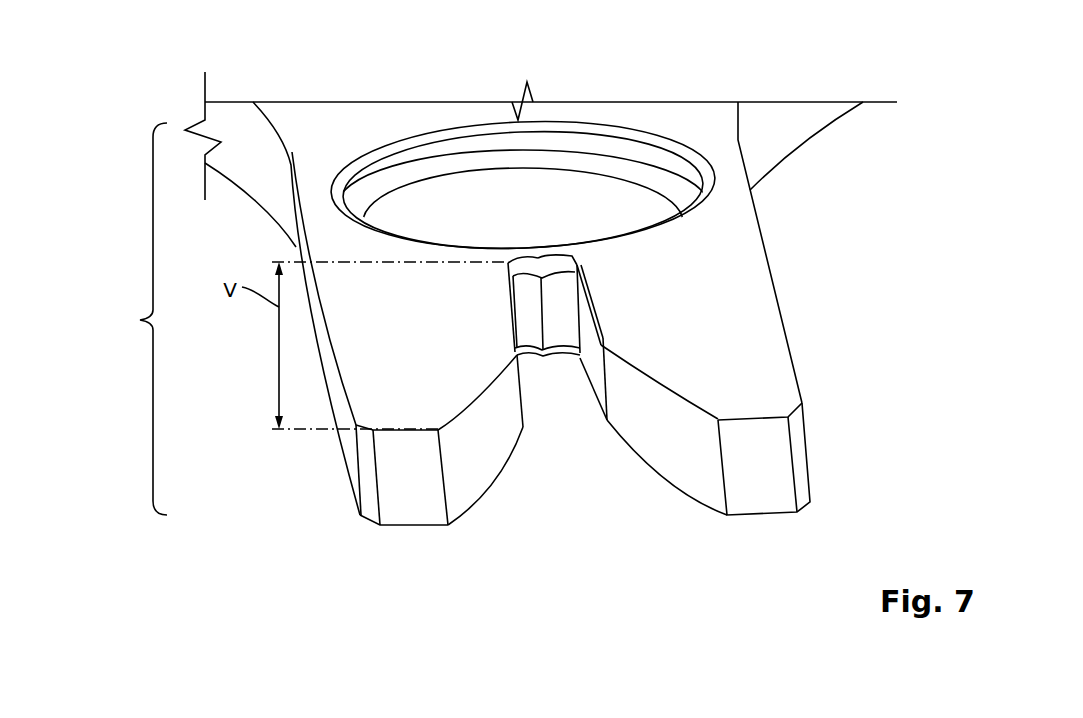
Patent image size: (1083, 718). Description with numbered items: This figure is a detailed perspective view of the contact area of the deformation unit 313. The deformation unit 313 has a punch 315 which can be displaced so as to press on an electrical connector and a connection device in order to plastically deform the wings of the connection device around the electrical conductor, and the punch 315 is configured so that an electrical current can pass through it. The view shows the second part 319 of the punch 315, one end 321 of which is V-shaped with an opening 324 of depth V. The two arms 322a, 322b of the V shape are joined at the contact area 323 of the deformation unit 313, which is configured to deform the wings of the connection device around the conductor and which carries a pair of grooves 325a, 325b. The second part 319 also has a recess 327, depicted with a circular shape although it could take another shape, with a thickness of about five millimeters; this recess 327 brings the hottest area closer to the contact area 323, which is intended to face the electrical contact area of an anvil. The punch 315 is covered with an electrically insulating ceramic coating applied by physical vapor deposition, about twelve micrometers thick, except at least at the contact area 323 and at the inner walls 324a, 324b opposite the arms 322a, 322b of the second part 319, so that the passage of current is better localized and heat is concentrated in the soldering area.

The deformation unit 313 is at (845, 150).
The punch 315 is at (710, 120).
The second part 319 is at (131, 319).
The end 321 is at (337, 346).
The arm 322a is at (412, 513).
The arm 322b is at (762, 497).
The contact area 323 is at (557, 285).
The opening 324 is at (567, 432).
The inner wall 324a is at (517, 428).
The inner wall 324b is at (612, 420).
The groove 325a is at (527, 267).
The groove 325b is at (552, 267).
The recess 327 is at (465, 180).